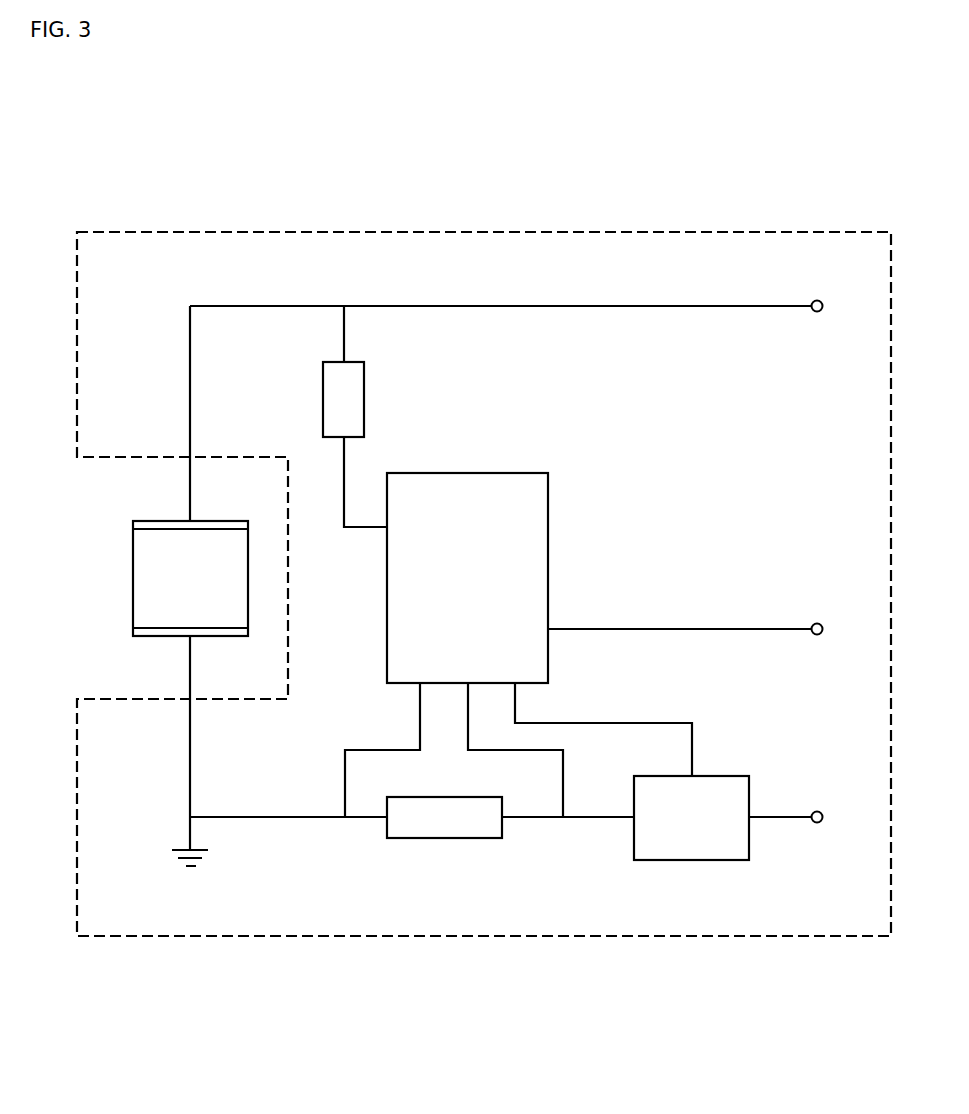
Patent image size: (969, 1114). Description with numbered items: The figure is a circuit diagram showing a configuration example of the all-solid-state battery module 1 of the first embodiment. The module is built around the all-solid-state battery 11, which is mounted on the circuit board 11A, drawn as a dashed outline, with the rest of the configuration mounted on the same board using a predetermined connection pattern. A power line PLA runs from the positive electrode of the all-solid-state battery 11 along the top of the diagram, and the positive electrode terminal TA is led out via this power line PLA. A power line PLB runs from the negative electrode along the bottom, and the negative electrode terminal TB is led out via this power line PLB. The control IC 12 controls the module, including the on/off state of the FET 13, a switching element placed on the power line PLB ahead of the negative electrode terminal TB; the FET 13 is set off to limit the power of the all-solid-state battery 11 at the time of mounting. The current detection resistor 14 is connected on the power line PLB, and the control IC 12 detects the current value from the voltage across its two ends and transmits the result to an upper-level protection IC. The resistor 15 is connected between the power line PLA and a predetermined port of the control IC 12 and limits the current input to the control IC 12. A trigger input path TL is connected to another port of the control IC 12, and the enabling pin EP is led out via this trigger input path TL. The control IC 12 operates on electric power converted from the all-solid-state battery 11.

The all-solid-state battery module 1 is at (491, 149).
The circuit board 11A is at (695, 231).
The all-solid-state battery 11 is at (133, 579).
The control IC 12 is at (465, 471).
The FET 13 is at (692, 863).
The current detection resistor 14 is at (445, 841).
The resistor 15 is at (323, 400).
The power line PLA is at (264, 304).
The power line PLB is at (265, 822).
The trigger input path TL is at (707, 626).
The positive electrode terminal TA is at (815, 299).
The negative electrode terminal TB is at (815, 810).
The enabling pin EP is at (815, 622).